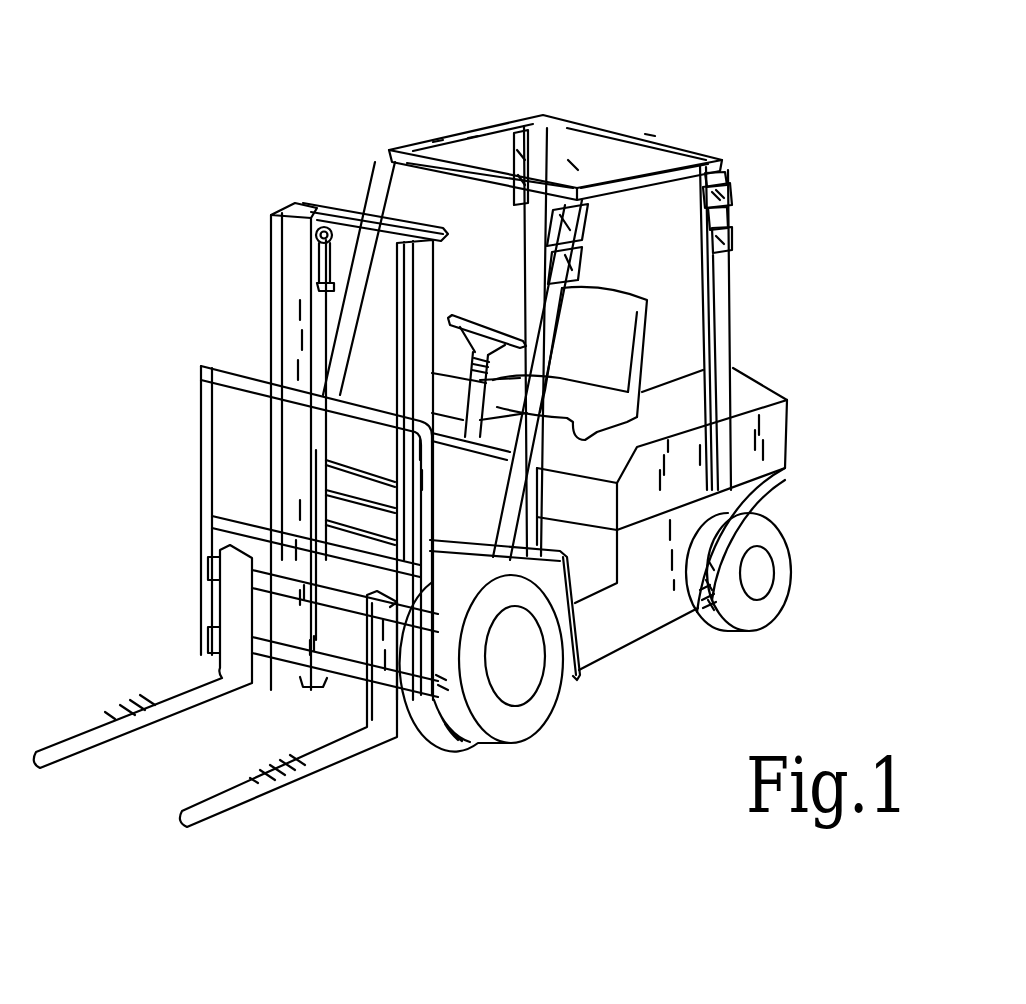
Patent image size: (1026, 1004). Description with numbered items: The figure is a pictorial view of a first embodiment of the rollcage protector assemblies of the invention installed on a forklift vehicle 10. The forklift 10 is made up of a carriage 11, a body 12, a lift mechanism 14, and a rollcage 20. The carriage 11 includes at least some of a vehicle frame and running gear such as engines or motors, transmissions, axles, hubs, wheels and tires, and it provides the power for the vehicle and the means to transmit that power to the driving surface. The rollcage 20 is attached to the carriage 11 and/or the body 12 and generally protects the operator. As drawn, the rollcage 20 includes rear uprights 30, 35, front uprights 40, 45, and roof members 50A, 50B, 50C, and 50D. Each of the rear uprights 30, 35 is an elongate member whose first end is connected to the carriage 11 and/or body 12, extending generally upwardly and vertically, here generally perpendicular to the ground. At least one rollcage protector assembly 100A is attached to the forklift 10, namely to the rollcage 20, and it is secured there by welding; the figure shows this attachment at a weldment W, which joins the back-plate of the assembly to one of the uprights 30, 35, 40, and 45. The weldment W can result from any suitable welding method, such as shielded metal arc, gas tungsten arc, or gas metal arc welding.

The forklift vehicle 10 is at (160, 180).
The carriage 11 is at (788, 582).
The body 12 is at (670, 620).
The lift mechanism 14 is at (182, 597).
The rollcage 20 is at (700, 135).
The rear upright 30 is at (717, 312).
The rear upright 35 is at (570, 165).
The front upright 40 is at (518, 472).
The front upright 45 is at (357, 253).
The roof member 50A is at (650, 134).
The roof member 50B is at (473, 136).
The roof member 50C is at (703, 258).
The roof member 50D is at (438, 141).
The rollcage protector assembly 100A is at (740, 196).
The weldment W is at (543, 167).